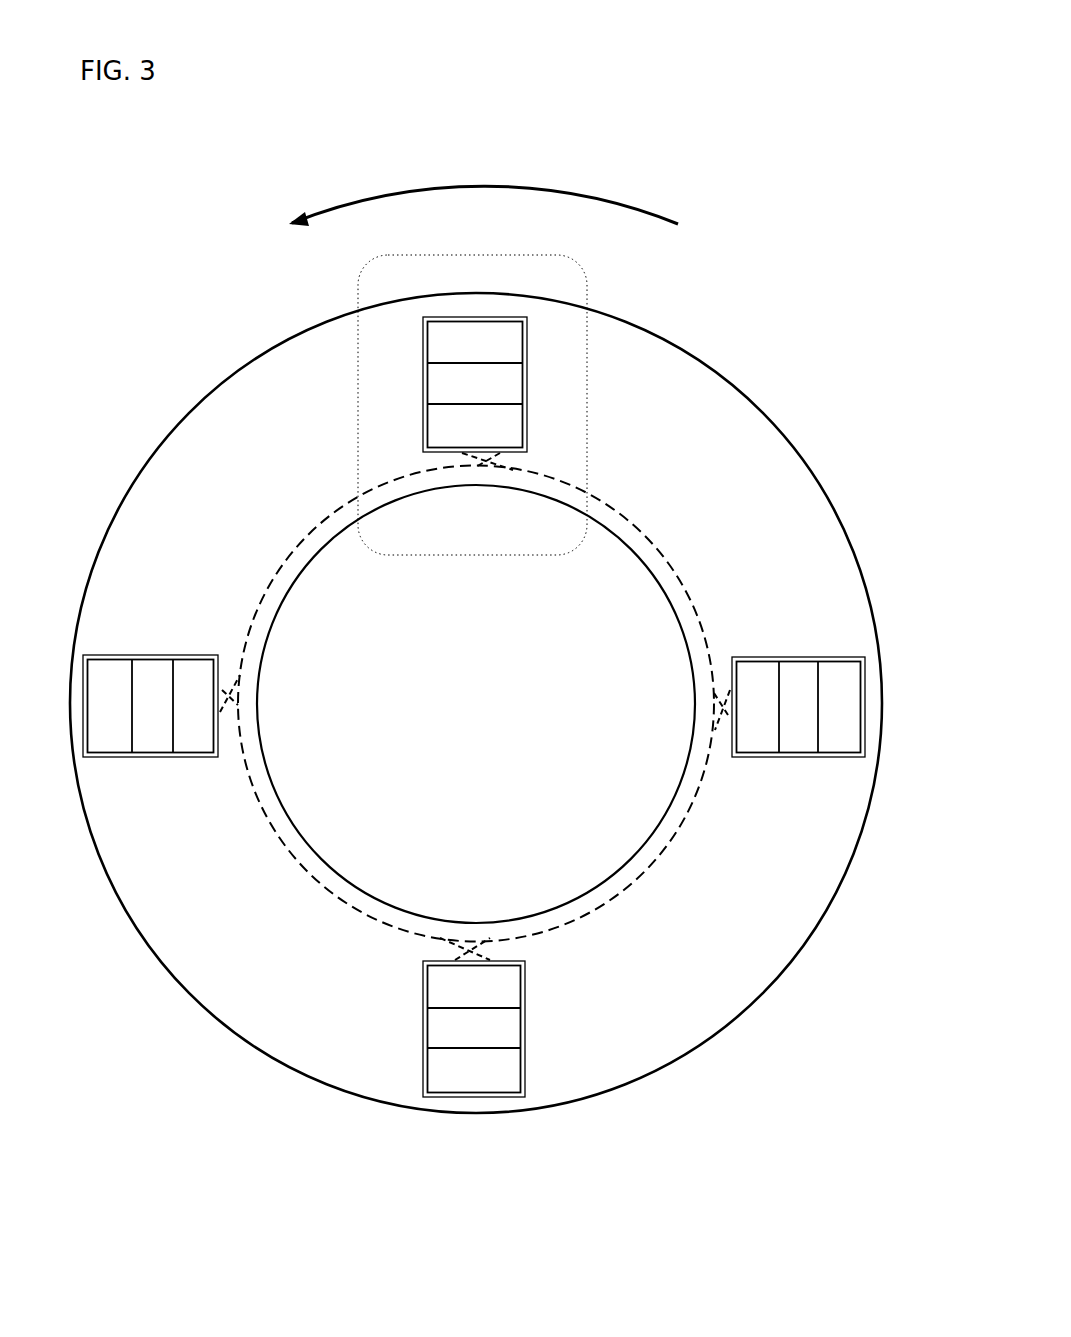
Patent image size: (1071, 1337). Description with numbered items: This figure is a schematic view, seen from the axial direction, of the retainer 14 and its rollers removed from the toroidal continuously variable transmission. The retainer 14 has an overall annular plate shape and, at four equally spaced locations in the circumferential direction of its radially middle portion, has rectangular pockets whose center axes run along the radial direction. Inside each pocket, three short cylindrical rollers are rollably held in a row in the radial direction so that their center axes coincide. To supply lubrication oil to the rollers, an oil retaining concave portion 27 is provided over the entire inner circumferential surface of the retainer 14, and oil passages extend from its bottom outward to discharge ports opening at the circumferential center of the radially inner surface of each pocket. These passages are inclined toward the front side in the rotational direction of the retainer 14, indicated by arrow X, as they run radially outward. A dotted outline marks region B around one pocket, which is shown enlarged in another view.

The retainer 14 is at (784, 430).
The oil retaining concave portion 27 is at (612, 520).
The region B is at (590, 368).
The arrow X is at (633, 200).